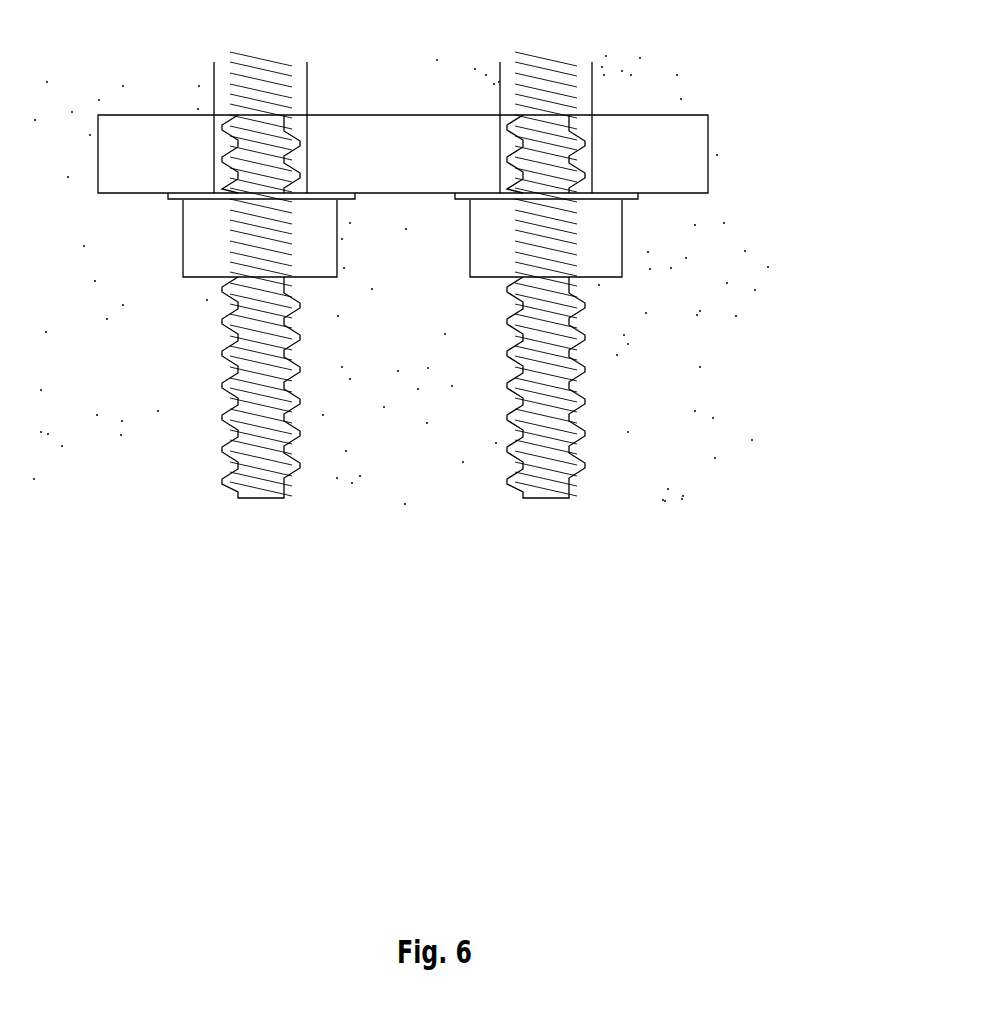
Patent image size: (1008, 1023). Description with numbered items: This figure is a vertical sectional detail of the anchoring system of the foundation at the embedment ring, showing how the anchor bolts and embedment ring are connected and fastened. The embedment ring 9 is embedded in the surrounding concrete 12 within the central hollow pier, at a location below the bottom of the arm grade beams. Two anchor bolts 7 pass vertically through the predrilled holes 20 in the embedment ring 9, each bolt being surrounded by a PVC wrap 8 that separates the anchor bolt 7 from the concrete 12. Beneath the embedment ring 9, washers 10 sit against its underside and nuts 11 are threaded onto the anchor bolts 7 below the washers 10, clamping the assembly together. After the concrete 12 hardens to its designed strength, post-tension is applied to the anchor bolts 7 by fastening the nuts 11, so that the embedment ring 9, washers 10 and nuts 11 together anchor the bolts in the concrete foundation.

The anchor bolts 7 is at (515, 400).
The PVC wrap 8 is at (310, 90).
The embedment ring 9 is at (167, 115).
The washers 10 is at (638, 200).
The nuts 11 is at (622, 247).
The concrete 12 is at (652, 422).
The predrilled holes in embedment ring 20 is at (590, 143).